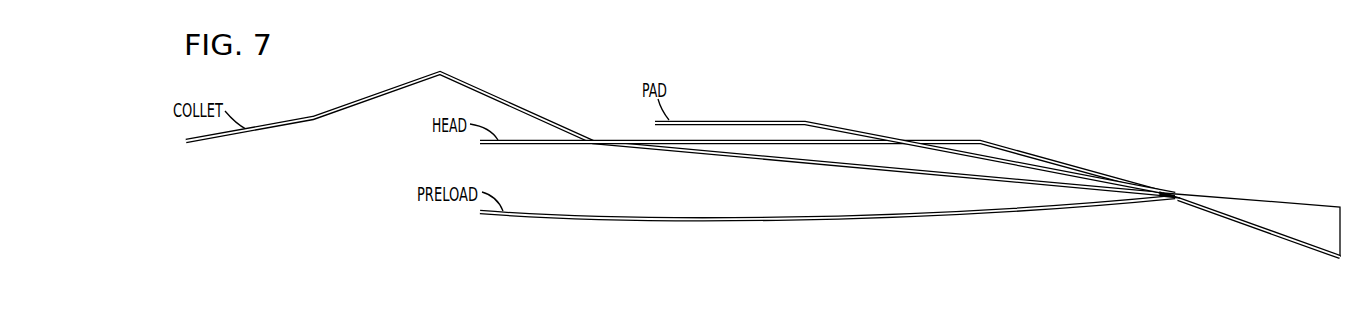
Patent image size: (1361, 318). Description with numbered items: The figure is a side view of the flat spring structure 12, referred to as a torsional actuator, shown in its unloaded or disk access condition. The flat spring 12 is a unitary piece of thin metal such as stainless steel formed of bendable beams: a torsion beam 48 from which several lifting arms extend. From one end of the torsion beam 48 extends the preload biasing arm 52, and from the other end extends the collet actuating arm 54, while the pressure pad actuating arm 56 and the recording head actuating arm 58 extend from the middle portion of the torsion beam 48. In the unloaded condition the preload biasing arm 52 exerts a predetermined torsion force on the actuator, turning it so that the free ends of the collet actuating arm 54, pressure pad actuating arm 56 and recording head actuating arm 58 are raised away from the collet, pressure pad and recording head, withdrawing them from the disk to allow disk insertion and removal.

The flat spring structure 12 is at (930, 222).
The torsion beam 48 is at (1302, 223).
The preload biasing arm 52 is at (625, 220).
The collet actuating arm 54 is at (500, 98).
The pressure pad actuating arm 56 is at (707, 121).
The recording head actuating arm 58 is at (523, 146).